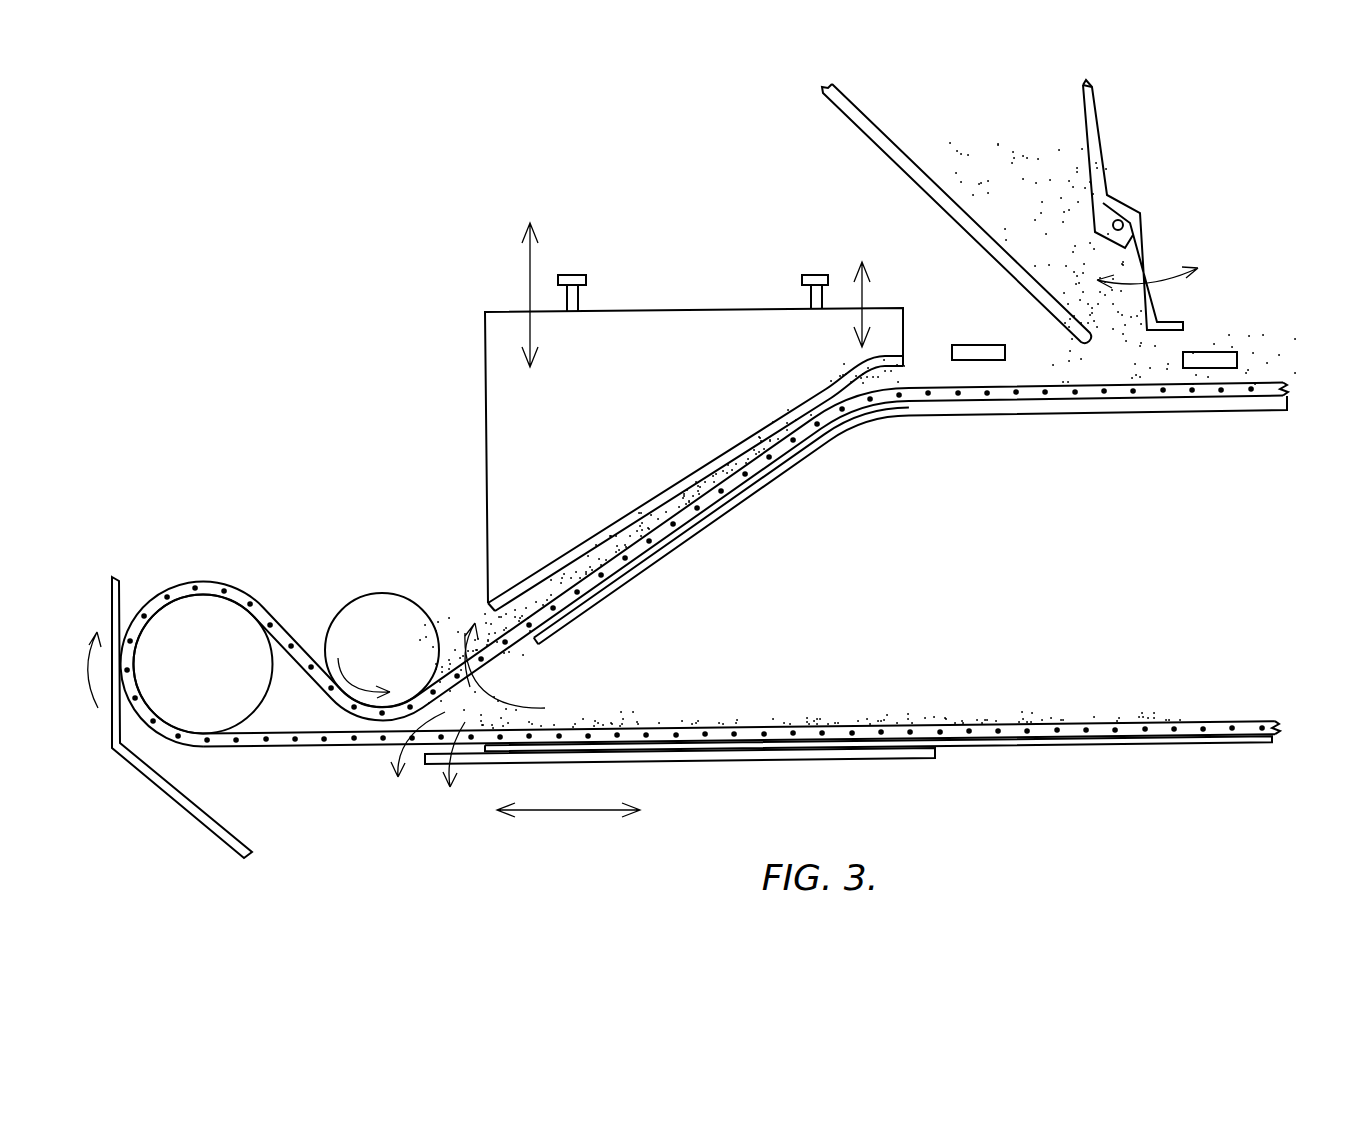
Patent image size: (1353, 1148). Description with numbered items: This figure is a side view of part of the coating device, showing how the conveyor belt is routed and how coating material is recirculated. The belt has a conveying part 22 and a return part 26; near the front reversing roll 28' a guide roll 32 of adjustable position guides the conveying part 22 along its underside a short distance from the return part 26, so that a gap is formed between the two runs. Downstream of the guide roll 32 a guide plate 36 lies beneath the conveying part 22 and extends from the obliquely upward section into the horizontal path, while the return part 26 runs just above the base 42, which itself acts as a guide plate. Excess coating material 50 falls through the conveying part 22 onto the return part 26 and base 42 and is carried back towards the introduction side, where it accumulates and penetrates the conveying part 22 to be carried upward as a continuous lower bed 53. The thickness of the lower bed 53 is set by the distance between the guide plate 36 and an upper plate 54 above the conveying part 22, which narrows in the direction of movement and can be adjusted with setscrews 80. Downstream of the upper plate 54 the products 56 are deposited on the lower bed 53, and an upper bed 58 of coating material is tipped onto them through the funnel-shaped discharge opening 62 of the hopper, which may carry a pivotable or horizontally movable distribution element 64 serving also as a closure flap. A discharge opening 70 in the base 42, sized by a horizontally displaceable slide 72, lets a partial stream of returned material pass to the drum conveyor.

The conveying part 22 is at (1233, 393).
The return part 26 is at (1193, 727).
The front reversing roll 28' is at (178, 616).
The guide roll 32 is at (379, 612).
The guide plate 36 is at (1170, 403).
The base 42 is at (1128, 745).
The coating material 50 is at (855, 698).
The lower bed 53 is at (662, 513).
The upper plate 54 is at (548, 570).
The products 56 is at (960, 345).
The upper bed 58 is at (1265, 350).
The discharge opening 62 is at (1082, 338).
The distribution element 64 is at (1137, 233).
The discharge opening 70 is at (381, 770).
The slide 72 is at (703, 763).
The setscrews 80 is at (805, 275).